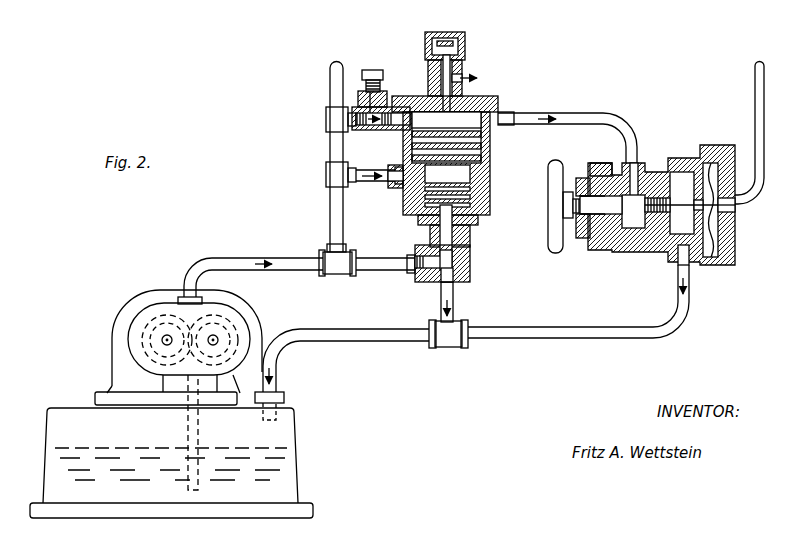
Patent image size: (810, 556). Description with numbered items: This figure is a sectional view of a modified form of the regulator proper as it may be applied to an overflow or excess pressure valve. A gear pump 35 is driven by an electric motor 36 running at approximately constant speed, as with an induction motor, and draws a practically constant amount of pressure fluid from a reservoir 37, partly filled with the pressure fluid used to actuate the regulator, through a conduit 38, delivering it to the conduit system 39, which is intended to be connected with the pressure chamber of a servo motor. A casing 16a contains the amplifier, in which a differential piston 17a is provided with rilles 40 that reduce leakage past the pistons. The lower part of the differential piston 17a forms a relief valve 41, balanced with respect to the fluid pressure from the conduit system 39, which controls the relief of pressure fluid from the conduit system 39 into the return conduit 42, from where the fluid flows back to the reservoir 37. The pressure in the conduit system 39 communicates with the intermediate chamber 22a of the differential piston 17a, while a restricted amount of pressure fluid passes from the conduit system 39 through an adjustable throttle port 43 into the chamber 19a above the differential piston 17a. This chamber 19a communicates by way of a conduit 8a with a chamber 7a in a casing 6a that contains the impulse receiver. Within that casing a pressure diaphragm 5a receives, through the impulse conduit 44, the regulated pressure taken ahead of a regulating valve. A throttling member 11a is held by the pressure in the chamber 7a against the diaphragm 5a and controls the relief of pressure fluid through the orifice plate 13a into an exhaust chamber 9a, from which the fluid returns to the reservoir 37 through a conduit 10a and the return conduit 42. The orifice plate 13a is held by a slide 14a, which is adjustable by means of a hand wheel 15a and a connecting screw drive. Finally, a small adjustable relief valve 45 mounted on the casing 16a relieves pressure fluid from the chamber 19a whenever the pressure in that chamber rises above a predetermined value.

The pressure diaphragm 5a is at (718, 231).
The casing 6a is at (683, 162).
The chamber 7a is at (636, 222).
The conduit 8a is at (585, 113).
The exhaust chamber 9a is at (683, 232).
The conduit 10a is at (688, 310).
The throttling member 11a is at (668, 248).
The orifice plate 13a is at (648, 177).
The slide 14a is at (592, 176).
The hand wheel 15a is at (553, 229).
The casing 16a is at (490, 143).
The differential piston 17a is at (482, 185).
The chamber 19a is at (425, 118).
The intermediate chamber 22a is at (488, 163).
The gear pump 35 is at (240, 318).
The electric motor 36 is at (156, 292).
The reservoir 37 is at (287, 427).
The conduit 38 is at (188, 428).
The conduit system 39 is at (330, 68).
The rilles 40 is at (420, 201).
The relief valve 41 is at (470, 256).
The return conduit 42 is at (440, 305).
The adjustable throttle port 43 is at (356, 130).
The impulse conduit 44 is at (755, 73).
The small adjustable relief valve 45 is at (456, 66).